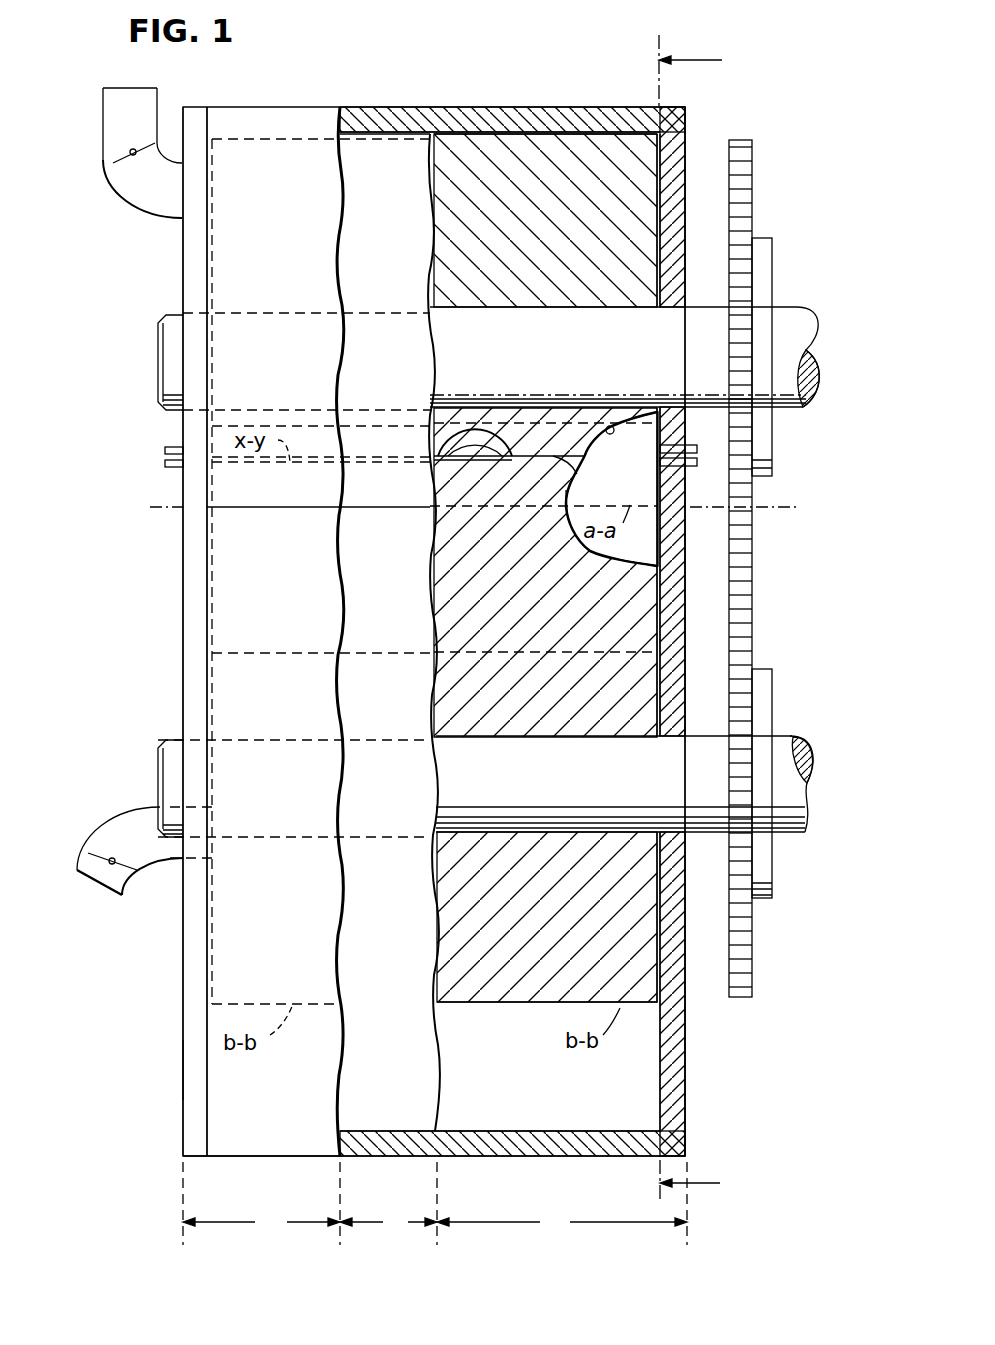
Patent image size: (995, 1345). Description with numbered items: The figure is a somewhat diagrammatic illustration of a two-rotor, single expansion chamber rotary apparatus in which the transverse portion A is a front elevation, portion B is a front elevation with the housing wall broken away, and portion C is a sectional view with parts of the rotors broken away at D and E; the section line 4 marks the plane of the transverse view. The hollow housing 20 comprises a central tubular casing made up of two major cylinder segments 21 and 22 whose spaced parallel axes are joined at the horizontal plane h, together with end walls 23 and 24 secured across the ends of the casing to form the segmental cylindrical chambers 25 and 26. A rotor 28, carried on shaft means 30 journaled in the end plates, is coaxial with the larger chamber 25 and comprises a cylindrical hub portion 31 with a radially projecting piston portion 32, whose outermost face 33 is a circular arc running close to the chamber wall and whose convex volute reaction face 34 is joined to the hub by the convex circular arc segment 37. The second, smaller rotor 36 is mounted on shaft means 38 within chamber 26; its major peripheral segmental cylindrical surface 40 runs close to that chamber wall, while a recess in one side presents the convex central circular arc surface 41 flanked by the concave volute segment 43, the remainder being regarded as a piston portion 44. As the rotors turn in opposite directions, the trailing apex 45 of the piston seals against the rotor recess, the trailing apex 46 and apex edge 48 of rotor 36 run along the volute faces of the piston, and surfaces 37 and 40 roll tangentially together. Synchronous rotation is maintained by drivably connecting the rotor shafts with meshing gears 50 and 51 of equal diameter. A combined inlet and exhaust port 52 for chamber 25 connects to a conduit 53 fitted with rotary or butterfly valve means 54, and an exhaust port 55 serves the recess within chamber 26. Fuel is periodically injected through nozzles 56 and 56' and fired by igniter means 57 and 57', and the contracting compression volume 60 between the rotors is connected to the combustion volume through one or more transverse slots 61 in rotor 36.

The section line 4- 4 is at (701, 617).
The hollow housing 20 is at (246, 557).
The cylinder segment 21 is at (272, 1142).
The cylinder segment 22 is at (247, 118).
The end wall 23 is at (195, 1058).
The end wall 24 is at (683, 1040).
The segmental cylindrical chamber 25 is at (634, 1096).
The segmental cylindrical chamber 26 is at (660, 158).
The rotor 28 is at (512, 1010).
The shaft means 30 is at (812, 832).
The cylindrical hub portion 31 is at (365, 688).
The piston portion 32 is at (645, 608).
The outermost face 33 is at (572, 480).
The reaction face 34 is at (368, 592).
The second rotor 36 is at (402, 165).
The convex circular arc segment 37 is at (396, 1004).
The shaft means 38 is at (797, 320).
The segmental cylindrical surface 40 is at (372, 145).
The convex central circular arc surface 41 is at (477, 457).
The concave volute arcuate segment 43 is at (643, 432).
The piston portion 44 is at (640, 222).
The trailing apex 45 is at (386, 505).
The trailing apex 46 is at (412, 507).
The trailing apex edge 48 is at (465, 507).
The gear 50 is at (752, 641).
The gear 51 is at (745, 190).
The combined inlet and exhaust port 52 is at (200, 860).
The conduit 53 is at (122, 827).
The valve means 54 is at (77, 870).
The exhaust port 55 is at (183, 190).
The nozzle 56 is at (145, 476).
The nozzle 56' is at (691, 481).
The igniter means 57 is at (146, 384).
The igniter means 57' is at (689, 395).
The compression volume 60 is at (640, 472).
The transverse slot 61 is at (478, 437).
The rotor break D is at (620, 557).
The rotor break E is at (609, 426).
The horizontal plane h- h is at (464, 508).
The transverse portion A is at (261, 1203).
The portion B is at (388, 1203).
The portion C is at (562, 1203).